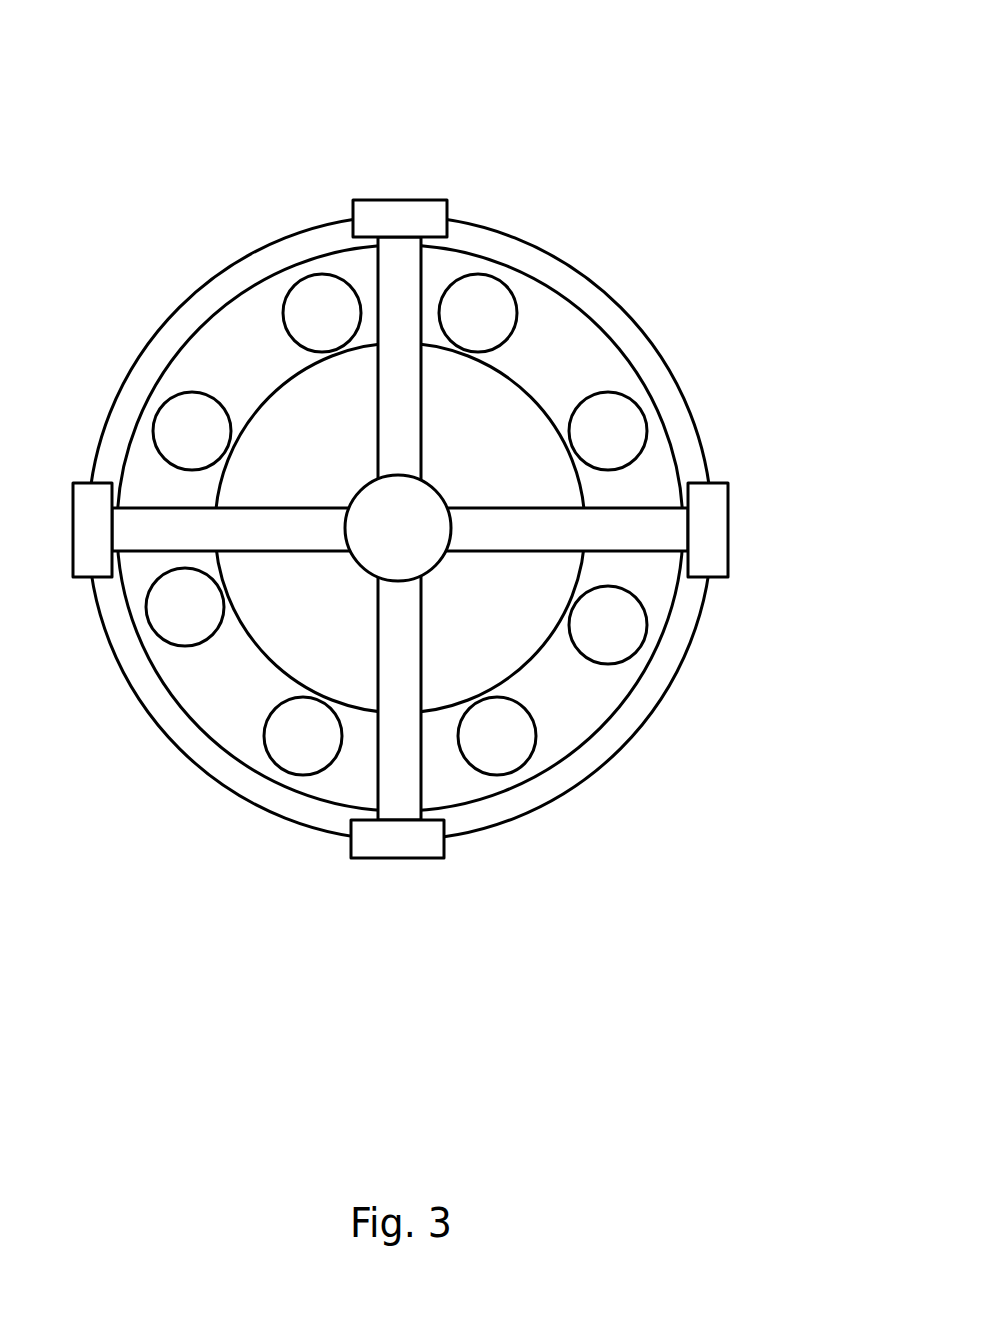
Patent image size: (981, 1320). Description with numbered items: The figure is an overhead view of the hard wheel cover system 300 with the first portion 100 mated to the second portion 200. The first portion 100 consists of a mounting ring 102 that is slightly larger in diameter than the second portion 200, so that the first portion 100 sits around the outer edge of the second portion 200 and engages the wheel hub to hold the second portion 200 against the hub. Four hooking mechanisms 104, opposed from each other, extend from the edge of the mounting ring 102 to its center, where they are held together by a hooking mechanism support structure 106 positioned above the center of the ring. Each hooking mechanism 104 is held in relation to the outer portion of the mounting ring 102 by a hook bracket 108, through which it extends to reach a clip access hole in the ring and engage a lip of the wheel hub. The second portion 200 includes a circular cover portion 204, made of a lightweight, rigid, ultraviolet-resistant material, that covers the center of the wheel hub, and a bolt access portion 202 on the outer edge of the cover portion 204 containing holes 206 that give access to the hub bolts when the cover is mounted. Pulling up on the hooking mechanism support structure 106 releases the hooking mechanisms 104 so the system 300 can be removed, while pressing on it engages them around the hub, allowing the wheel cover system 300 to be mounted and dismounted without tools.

The first portion 100 is at (228, 252).
The mounting ring 102 is at (622, 332).
The hooking mechanism 104 is at (548, 535).
The hooking mechanism support structure 106 is at (382, 548).
The hook bracket 108 is at (717, 520).
The second portion 200 is at (213, 367).
The bolt access portion 202 is at (530, 305).
The cover portion 204 is at (517, 627).
The hole 206 is at (302, 738).
The hard wheel cover system 300 is at (742, 106).